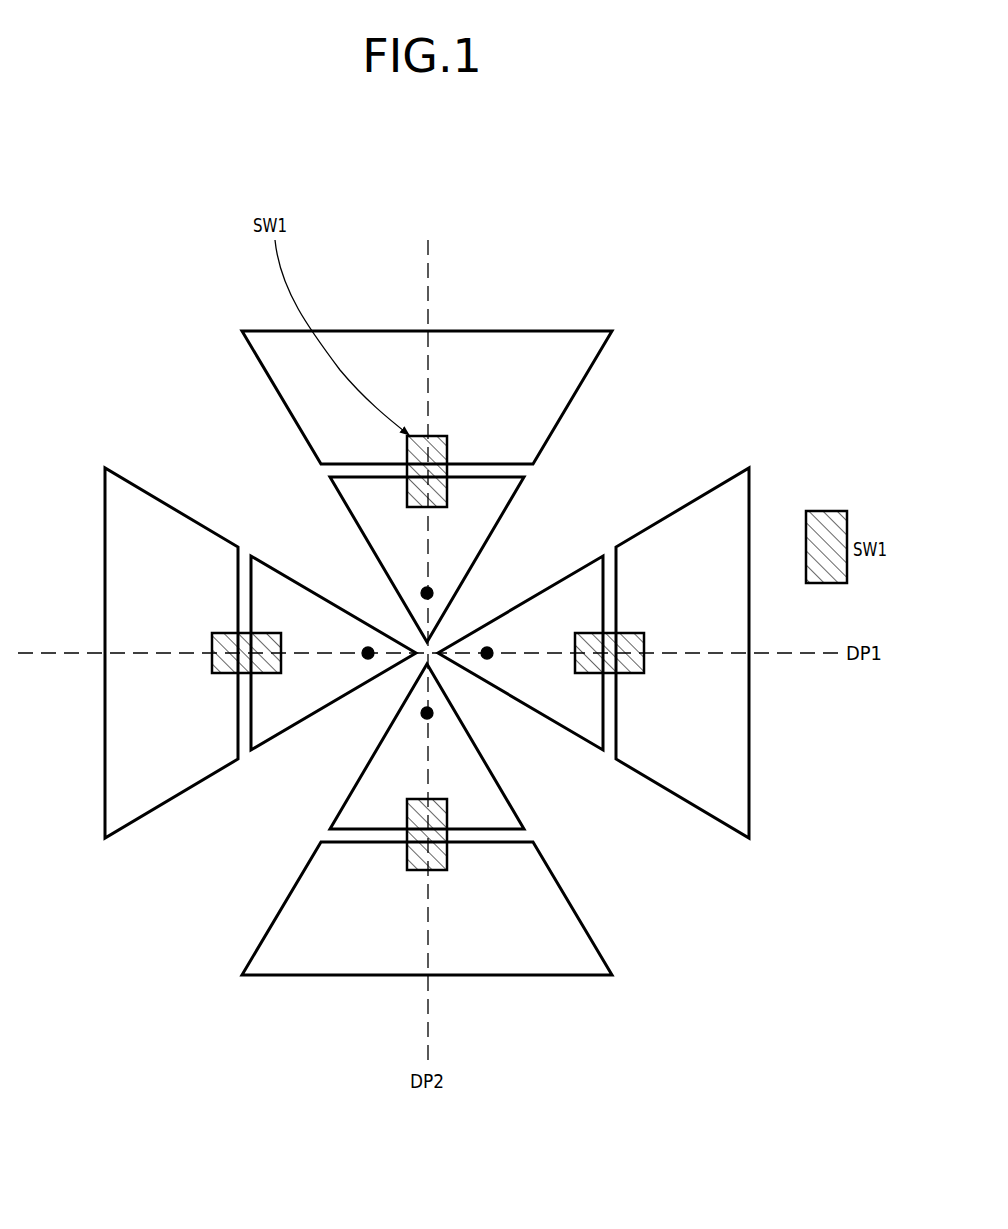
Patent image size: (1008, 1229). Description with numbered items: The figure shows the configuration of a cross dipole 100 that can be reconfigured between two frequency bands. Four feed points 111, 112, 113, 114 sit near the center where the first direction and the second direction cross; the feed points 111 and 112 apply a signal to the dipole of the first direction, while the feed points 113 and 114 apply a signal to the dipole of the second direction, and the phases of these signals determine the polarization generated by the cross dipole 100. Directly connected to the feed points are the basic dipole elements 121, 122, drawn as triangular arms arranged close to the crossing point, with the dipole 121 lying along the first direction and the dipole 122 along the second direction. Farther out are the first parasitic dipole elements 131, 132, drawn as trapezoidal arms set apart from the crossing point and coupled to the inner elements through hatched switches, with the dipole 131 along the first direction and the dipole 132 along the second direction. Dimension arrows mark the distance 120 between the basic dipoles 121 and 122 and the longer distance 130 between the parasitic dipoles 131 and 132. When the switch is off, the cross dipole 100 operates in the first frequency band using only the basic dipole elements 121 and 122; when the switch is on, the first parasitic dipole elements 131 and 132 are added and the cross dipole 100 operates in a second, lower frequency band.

The cross dipole 100 is at (718, 322).
The feed point 111 is at (362, 643).
The feed point 112 is at (493, 663).
The feed point 113 is at (419, 714).
The feed point 114 is at (436, 591).
The distance between the basic dipole elements 120 is at (527, 479).
The basic dipole element of the first direction 121 is at (426, 653).
The basic dipole element of the second direction 122 is at (427, 651).
The distance between the first parasitic dipole elements 130 is at (616, 333).
The first parasitic dipole element of the first direction 131 is at (430, 653).
The first parasitic dipole element of the second direction 132 is at (427, 651).